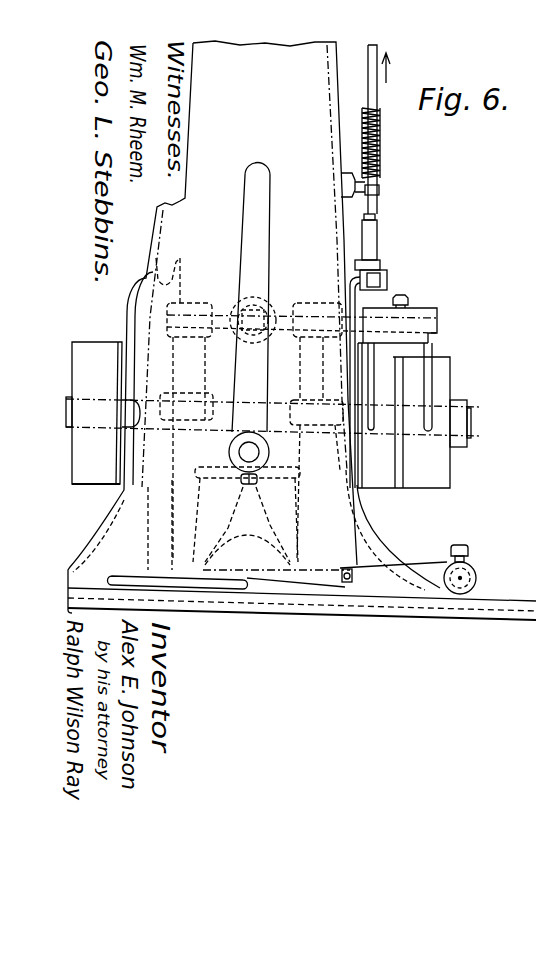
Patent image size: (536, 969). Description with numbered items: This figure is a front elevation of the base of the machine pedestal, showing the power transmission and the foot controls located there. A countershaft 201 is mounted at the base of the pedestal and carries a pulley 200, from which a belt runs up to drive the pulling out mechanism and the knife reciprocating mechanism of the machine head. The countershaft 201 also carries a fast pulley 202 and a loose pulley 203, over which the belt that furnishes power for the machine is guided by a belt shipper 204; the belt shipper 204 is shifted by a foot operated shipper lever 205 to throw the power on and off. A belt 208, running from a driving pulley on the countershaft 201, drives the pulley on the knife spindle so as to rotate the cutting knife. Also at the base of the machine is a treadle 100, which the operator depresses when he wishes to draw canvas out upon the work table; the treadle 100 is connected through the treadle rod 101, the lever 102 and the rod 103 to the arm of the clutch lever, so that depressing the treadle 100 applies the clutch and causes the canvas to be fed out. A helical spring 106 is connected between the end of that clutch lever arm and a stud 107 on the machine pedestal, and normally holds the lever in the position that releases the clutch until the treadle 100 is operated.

The treadle 100 is at (212, 580).
The treadle rod 101 is at (350, 533).
The lever 102 is at (388, 283).
The rod 103 is at (372, 209).
The helical spring 106 is at (380, 148).
The stud 107 is at (377, 192).
The pulley 200 is at (93, 347).
The countershaft 201 is at (474, 432).
The fast pulley 202 is at (386, 485).
The loose pulley 203 is at (439, 490).
The belt shipper 204 is at (432, 345).
The foot operated shipper lever 205 is at (258, 228).
The belt 208 is at (182, 256).